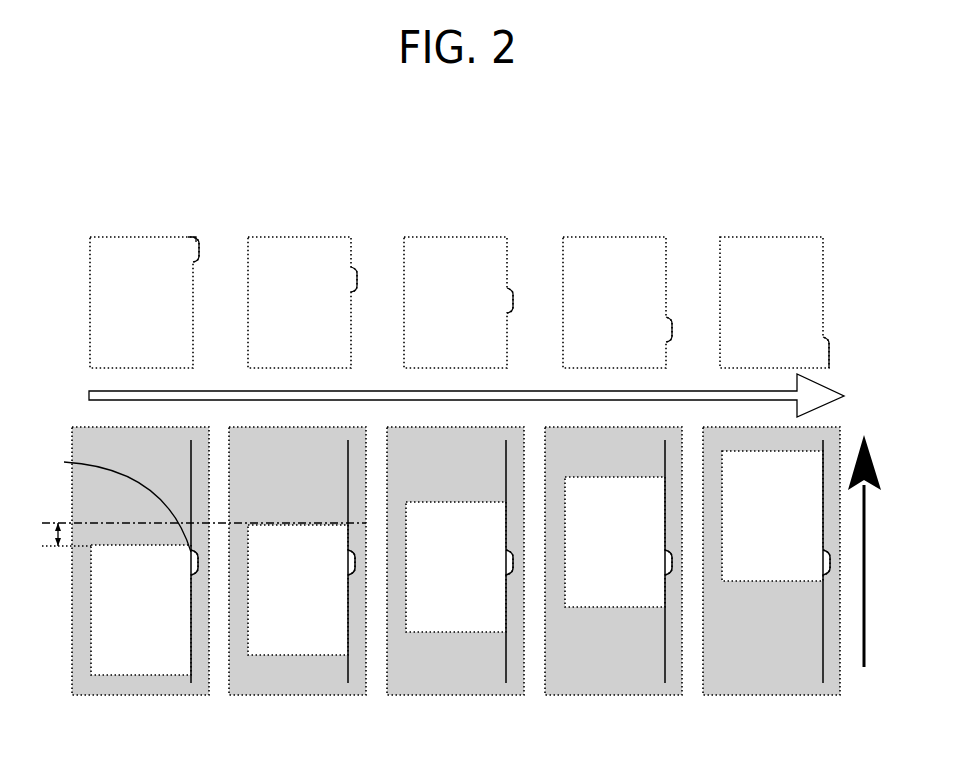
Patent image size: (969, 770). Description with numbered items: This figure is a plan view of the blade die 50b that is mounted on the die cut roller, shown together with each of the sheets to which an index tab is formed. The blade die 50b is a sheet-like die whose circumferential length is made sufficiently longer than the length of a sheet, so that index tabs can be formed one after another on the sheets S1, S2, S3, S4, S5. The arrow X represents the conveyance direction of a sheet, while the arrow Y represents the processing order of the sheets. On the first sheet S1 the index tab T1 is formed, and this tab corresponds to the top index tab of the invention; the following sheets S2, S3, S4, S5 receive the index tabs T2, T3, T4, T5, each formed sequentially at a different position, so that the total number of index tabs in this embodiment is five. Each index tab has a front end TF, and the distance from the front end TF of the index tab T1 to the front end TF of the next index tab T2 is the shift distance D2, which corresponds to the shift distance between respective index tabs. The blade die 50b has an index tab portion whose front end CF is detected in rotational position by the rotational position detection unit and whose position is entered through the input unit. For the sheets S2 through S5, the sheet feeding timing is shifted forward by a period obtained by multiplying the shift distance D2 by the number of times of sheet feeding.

The sheet S1 is at (138, 252).
The sheet S2 is at (298, 252).
The sheet S3 is at (455, 252).
The sheet S4 is at (608, 252).
The sheet S5 is at (765, 252).
The front end of the index tab TF is at (193, 240).
The index tab T1 is at (195, 265).
The index tab T2 is at (353, 278).
The index tab T3 is at (508, 297).
The index tab T4 is at (668, 327).
The index tab T5 is at (826, 350).
The arrow representing processing order Y is at (88, 396).
The arrow representing conveyance direction X is at (867, 537).
The front end of index tab portion of blade die CF is at (112, 499).
The shift distance D2 is at (56, 535).
The blade die 50b is at (131, 697).